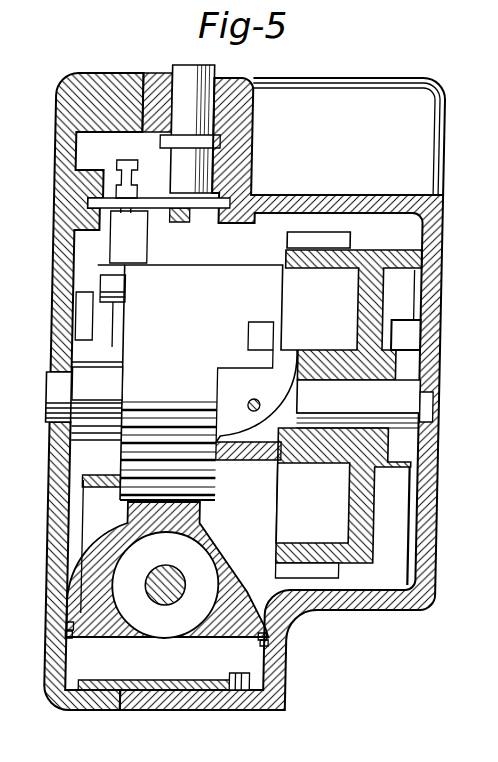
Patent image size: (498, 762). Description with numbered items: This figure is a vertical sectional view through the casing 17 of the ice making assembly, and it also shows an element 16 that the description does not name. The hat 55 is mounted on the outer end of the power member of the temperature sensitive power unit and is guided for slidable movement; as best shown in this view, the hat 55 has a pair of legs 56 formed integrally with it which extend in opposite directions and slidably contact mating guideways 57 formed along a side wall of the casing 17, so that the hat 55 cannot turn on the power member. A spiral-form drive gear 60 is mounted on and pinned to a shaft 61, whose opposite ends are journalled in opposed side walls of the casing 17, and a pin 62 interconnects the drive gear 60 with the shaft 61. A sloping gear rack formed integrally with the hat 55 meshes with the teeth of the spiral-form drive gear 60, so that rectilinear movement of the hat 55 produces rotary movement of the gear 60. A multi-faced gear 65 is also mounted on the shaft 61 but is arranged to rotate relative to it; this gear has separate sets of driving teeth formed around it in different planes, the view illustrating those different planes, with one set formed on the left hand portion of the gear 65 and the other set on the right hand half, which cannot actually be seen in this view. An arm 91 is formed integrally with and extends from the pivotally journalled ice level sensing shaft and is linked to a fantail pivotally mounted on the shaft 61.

The retainer plate 16 is at (332, 230).
The casing 17 is at (111, 387).
The hat 55 is at (237, 559).
The legs 56 is at (70, 622).
The guideways 57 is at (70, 634).
The spiral-form drive gear 60 is at (175, 363).
The shaft 61 is at (364, 406).
The pin 62 is at (249, 404).
The multi-faced gear 65 is at (438, 241).
The arm 91 is at (115, 211).